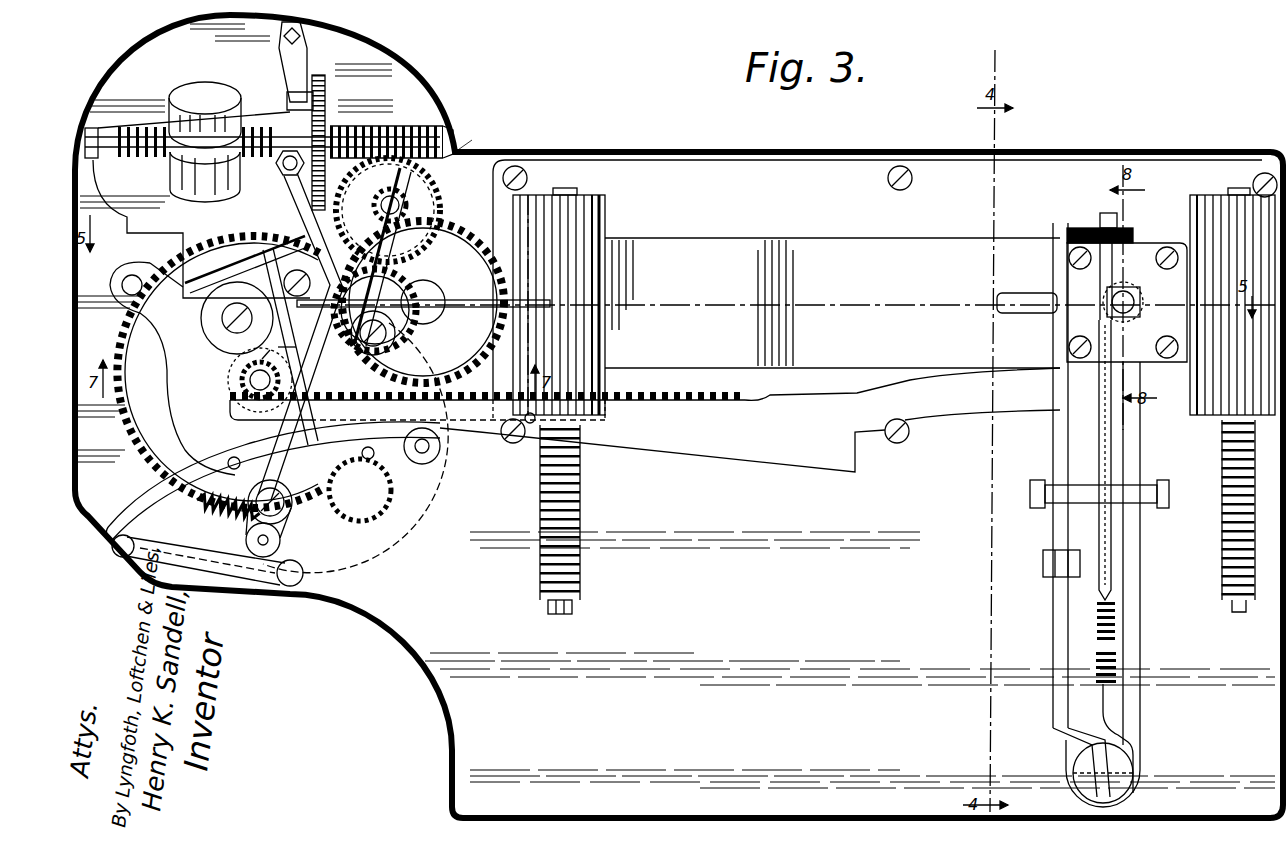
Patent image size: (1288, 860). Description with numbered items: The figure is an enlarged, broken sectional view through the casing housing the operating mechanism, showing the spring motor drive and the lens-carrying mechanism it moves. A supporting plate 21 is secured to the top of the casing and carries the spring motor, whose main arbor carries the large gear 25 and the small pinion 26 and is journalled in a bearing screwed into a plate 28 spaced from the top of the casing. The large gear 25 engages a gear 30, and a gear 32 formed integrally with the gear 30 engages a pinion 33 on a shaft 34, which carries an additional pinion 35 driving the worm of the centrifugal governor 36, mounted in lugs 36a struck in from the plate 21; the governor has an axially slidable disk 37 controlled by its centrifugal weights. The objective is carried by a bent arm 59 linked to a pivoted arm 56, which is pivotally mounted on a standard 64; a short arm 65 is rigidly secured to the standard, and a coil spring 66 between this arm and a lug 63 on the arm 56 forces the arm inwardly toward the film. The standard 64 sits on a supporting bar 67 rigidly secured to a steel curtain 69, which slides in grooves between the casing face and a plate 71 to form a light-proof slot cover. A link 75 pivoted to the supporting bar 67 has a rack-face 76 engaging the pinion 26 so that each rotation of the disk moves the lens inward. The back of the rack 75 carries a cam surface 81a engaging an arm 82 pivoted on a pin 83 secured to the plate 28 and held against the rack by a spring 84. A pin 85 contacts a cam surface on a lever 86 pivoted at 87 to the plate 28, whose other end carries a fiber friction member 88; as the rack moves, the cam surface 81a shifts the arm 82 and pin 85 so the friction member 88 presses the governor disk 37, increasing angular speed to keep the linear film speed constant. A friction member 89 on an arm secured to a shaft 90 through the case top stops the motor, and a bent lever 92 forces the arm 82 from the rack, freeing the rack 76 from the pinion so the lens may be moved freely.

The supporting plate 21 is at (130, 192).
The large gear 25 is at (133, 330).
The small pinion 26 is at (243, 372).
The plate 28 is at (183, 407).
The gear 30 is at (447, 286).
The gear 32 is at (482, 150).
The pinion 33 is at (383, 202).
The shaft 34 is at (340, 250).
The pinion 35 is at (480, 134).
The centrifugal governor 36 is at (340, 120).
The lugs 36a is at (87, 123).
The disk 37 is at (327, 80).
The pivoted arm 56 is at (1060, 520).
The bent arm 59 is at (1105, 547).
The lug 63 is at (1092, 643).
The standard 64 is at (1077, 763).
The short arm 65 is at (1117, 728).
The coil spring 66 is at (1113, 667).
The supporting bar 67 is at (1132, 597).
The steel curtain 69 is at (873, 310).
The plate 71 is at (763, 197).
The link 75 is at (828, 440).
The rack-face 76 is at (680, 390).
The cam surface 81a is at (722, 458).
The arm 82 is at (440, 455).
The pin 83 is at (232, 457).
The spring 84 is at (240, 560).
The pin 85 is at (395, 495).
The lever 86 is at (378, 560).
The pivot 87 is at (258, 262).
The fiber friction member 88 is at (270, 118).
The friction member 89 is at (290, 80).
The shaft 90 is at (307, 27).
The bent lever 92 is at (267, 565).